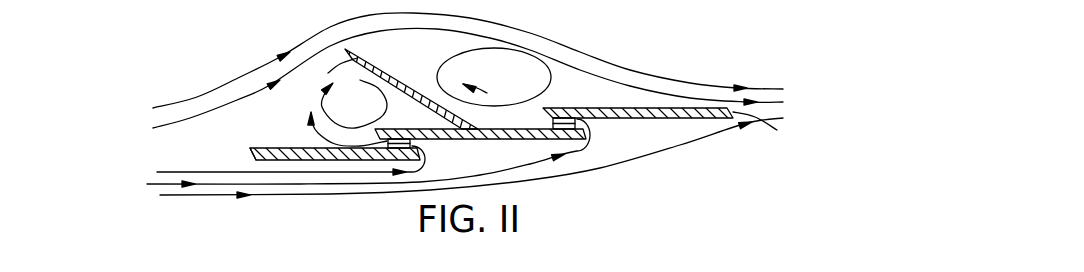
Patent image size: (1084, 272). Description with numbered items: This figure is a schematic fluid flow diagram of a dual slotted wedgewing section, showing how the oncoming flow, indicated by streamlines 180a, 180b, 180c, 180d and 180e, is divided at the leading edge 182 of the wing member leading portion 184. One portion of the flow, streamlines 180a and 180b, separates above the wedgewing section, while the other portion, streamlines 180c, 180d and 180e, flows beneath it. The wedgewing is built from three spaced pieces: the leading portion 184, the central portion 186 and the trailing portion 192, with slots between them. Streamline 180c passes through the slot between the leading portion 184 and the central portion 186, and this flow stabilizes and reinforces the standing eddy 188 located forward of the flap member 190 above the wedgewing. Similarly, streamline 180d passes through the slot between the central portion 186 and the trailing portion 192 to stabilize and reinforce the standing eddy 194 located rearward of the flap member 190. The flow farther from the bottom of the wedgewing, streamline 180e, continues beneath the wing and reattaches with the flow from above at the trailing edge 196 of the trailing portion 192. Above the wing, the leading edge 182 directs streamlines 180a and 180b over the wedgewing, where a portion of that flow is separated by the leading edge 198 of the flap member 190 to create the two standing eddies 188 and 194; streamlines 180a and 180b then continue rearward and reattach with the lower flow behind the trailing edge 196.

The streamline 180a is at (198, 98).
The streamline 180b is at (237, 100).
The streamline 180c is at (193, 171).
The streamline 180d is at (147, 185).
The streamline 180e is at (225, 196).
The leading edge 182 is at (250, 150).
The wing member leading portion 184 is at (282, 147).
The central portion 186 is at (510, 140).
The standing eddy 188 is at (330, 123).
The flap member 190 is at (390, 52).
The trailing portion 192 is at (663, 118).
The standing eddy 194 is at (552, 77).
The trailing edge 196 is at (765, 132).
The leading edge of flap member 198 is at (327, 73).